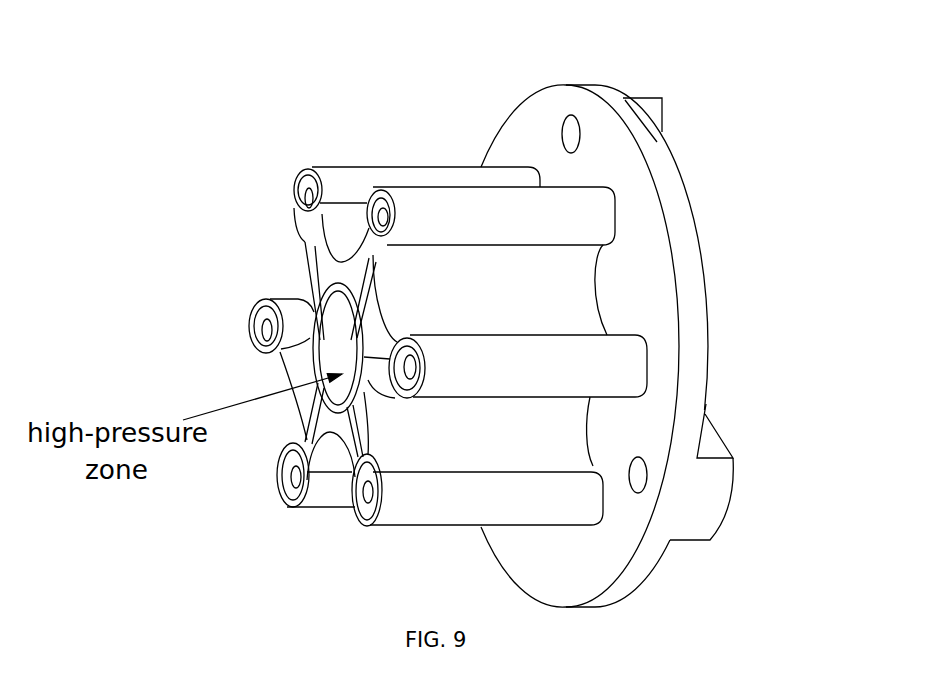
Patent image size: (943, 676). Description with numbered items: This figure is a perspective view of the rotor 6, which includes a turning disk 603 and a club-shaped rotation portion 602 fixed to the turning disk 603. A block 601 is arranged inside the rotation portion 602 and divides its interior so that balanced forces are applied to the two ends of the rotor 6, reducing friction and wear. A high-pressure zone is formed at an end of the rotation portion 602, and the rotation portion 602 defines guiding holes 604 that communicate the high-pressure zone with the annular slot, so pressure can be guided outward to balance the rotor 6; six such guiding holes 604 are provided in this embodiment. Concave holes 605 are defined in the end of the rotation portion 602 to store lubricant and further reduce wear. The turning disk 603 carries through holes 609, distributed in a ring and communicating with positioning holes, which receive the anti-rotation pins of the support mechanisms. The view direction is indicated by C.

The rotor 6 is at (675, 113).
The block 601 is at (352, 345).
The rotation portion 602 is at (613, 382).
The turning disk 603 is at (680, 242).
The guiding hole 604 is at (258, 333).
The concave hole 605 is at (305, 193).
The through hole 609 is at (570, 133).
The viewing direction C is at (740, 288).